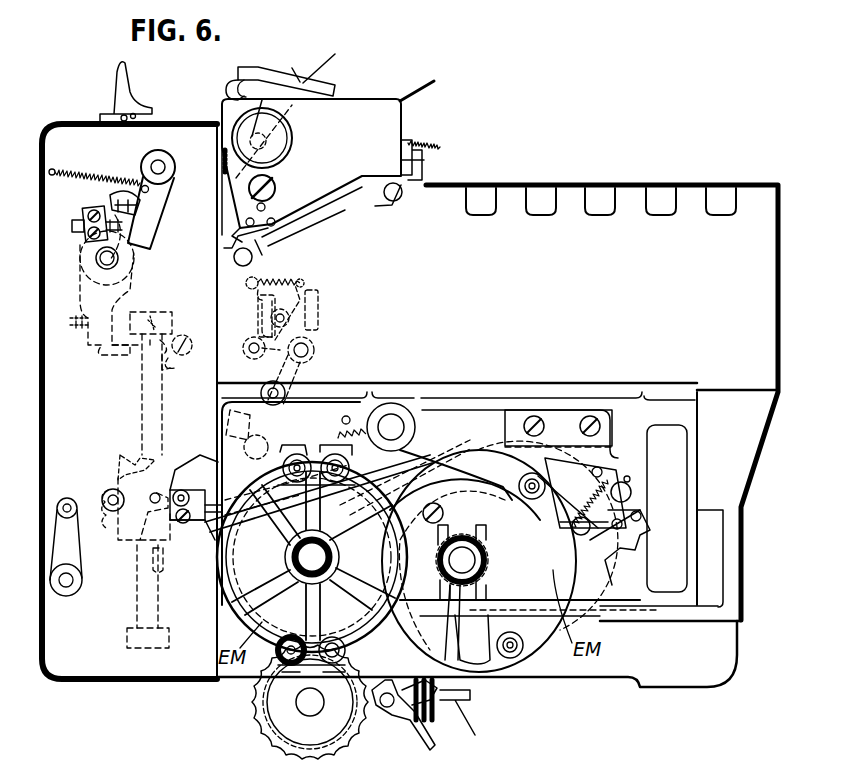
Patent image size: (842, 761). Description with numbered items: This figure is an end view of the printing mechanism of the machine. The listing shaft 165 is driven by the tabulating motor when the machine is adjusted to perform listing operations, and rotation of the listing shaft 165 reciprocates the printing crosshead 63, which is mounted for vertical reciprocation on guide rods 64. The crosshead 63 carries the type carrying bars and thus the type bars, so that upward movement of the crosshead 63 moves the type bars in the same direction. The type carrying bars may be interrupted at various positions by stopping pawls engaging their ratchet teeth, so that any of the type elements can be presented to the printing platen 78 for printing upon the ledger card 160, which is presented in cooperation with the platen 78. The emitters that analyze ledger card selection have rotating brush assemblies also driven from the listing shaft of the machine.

The printing platen 78 is at (297, 145).
The ledger card 160 is at (420, 100).
The guide rods 64 is at (143, 415).
The printing crosshead 63 is at (128, 540).
The listing shaft 165 is at (462, 560).